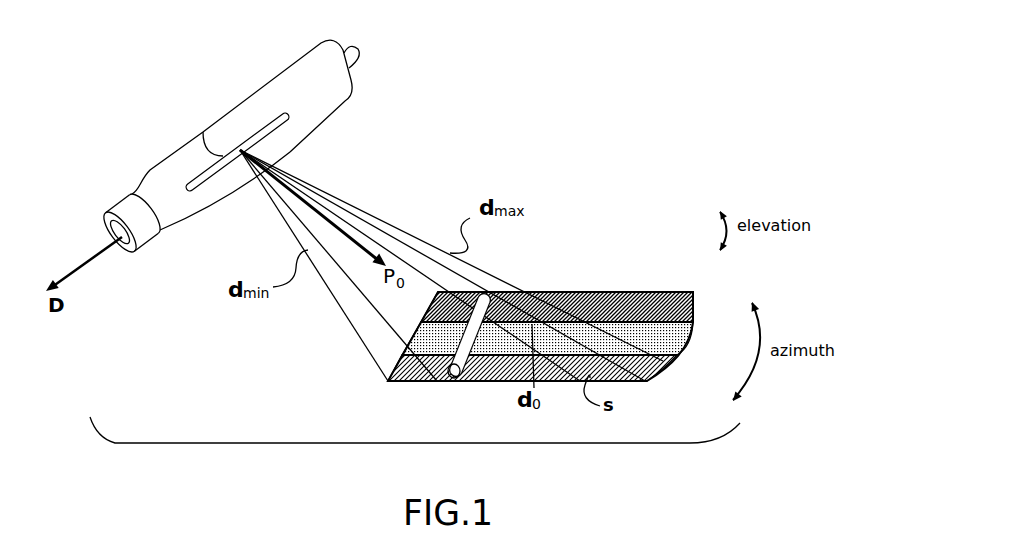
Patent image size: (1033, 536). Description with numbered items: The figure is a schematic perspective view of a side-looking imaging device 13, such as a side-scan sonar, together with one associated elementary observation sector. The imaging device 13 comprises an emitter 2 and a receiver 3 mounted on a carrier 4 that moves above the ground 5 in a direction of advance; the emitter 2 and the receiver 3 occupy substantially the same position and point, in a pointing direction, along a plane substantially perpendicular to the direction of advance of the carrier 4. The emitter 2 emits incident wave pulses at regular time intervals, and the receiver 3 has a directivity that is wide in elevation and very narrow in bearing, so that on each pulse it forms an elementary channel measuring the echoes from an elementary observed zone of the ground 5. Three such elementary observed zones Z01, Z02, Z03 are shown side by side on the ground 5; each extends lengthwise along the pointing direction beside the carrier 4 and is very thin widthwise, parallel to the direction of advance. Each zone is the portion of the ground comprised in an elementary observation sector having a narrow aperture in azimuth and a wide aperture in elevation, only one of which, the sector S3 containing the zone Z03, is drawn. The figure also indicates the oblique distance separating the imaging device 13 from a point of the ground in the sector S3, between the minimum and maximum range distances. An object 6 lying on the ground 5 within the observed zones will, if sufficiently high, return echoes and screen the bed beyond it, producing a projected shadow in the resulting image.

The imaging device 13 is at (228, 134).
The carrier 4 is at (282, 73).
The emitter 2 is at (194, 169).
The receiver 3 is at (203, 132).
The ground 5 is at (674, 428).
The object 6 is at (448, 340).
The elementary observed zone Z01 is at (694, 302).
The elementary observed zone Z02 is at (690, 325).
The elementary observed zone Z03 is at (660, 360).
The elementary observation sector S3 is at (360, 334).